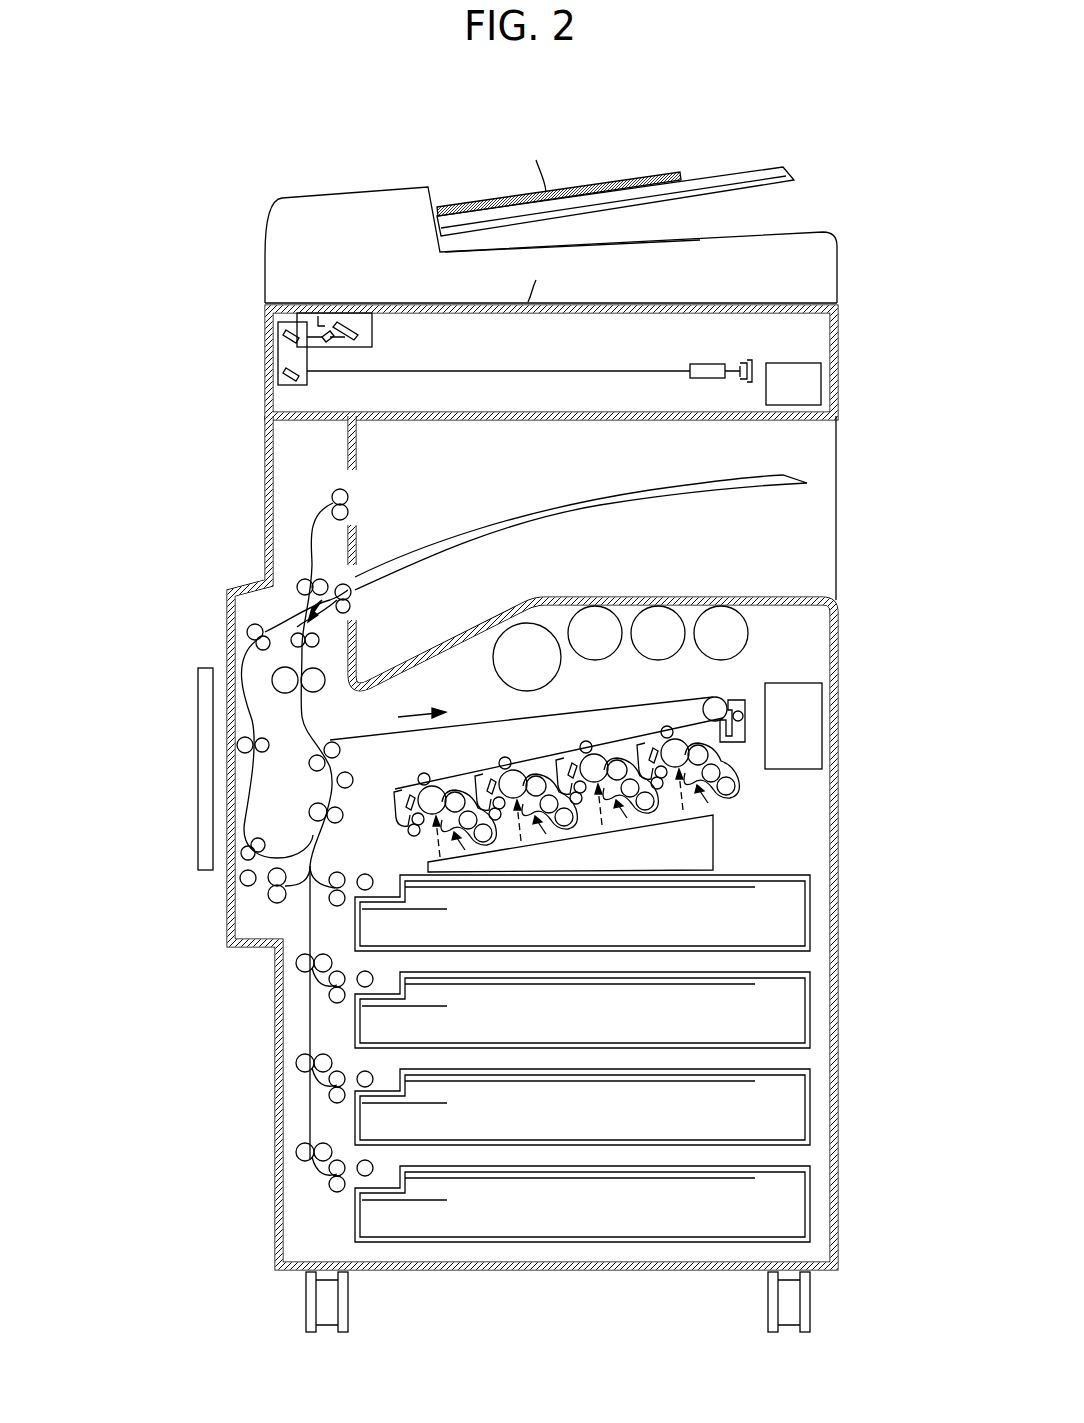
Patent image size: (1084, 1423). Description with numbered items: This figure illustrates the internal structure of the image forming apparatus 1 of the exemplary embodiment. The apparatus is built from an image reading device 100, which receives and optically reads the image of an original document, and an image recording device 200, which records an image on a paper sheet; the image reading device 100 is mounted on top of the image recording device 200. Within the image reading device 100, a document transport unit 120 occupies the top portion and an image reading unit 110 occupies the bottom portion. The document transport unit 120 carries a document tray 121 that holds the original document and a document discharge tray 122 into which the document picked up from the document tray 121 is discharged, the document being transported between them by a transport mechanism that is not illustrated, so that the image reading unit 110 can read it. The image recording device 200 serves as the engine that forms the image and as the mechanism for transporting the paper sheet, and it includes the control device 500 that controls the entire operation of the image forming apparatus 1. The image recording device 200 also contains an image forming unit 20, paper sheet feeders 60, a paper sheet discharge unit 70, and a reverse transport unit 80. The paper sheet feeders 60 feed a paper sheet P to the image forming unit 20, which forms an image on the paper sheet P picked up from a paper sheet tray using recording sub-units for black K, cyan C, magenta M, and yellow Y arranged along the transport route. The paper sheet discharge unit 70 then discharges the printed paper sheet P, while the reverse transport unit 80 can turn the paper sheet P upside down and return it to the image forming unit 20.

The image forming apparatus 1 is at (203, 158).
The image reading device 100 is at (147, 245).
The image reading unit 110 is at (250, 381).
The document transport unit 120 is at (250, 268).
The document tray 121 is at (723, 172).
The document discharge tray 122 is at (612, 235).
The image recording device 200 is at (250, 473).
The image forming unit 20 is at (775, 634).
The control device 500 is at (822, 700).
The paper sheet discharge unit 70 is at (288, 550).
The reverse transport unit 80 is at (245, 780).
The paper sheet feeders 60 is at (300, 1205).
The black recording sub-unit K is at (523, 632).
The cyan recording sub-unit C is at (592, 618).
The magenta recording sub-unit M is at (658, 618).
The yellow recording sub-unit Y is at (726, 618).
The paper sheet P is at (790, 872).